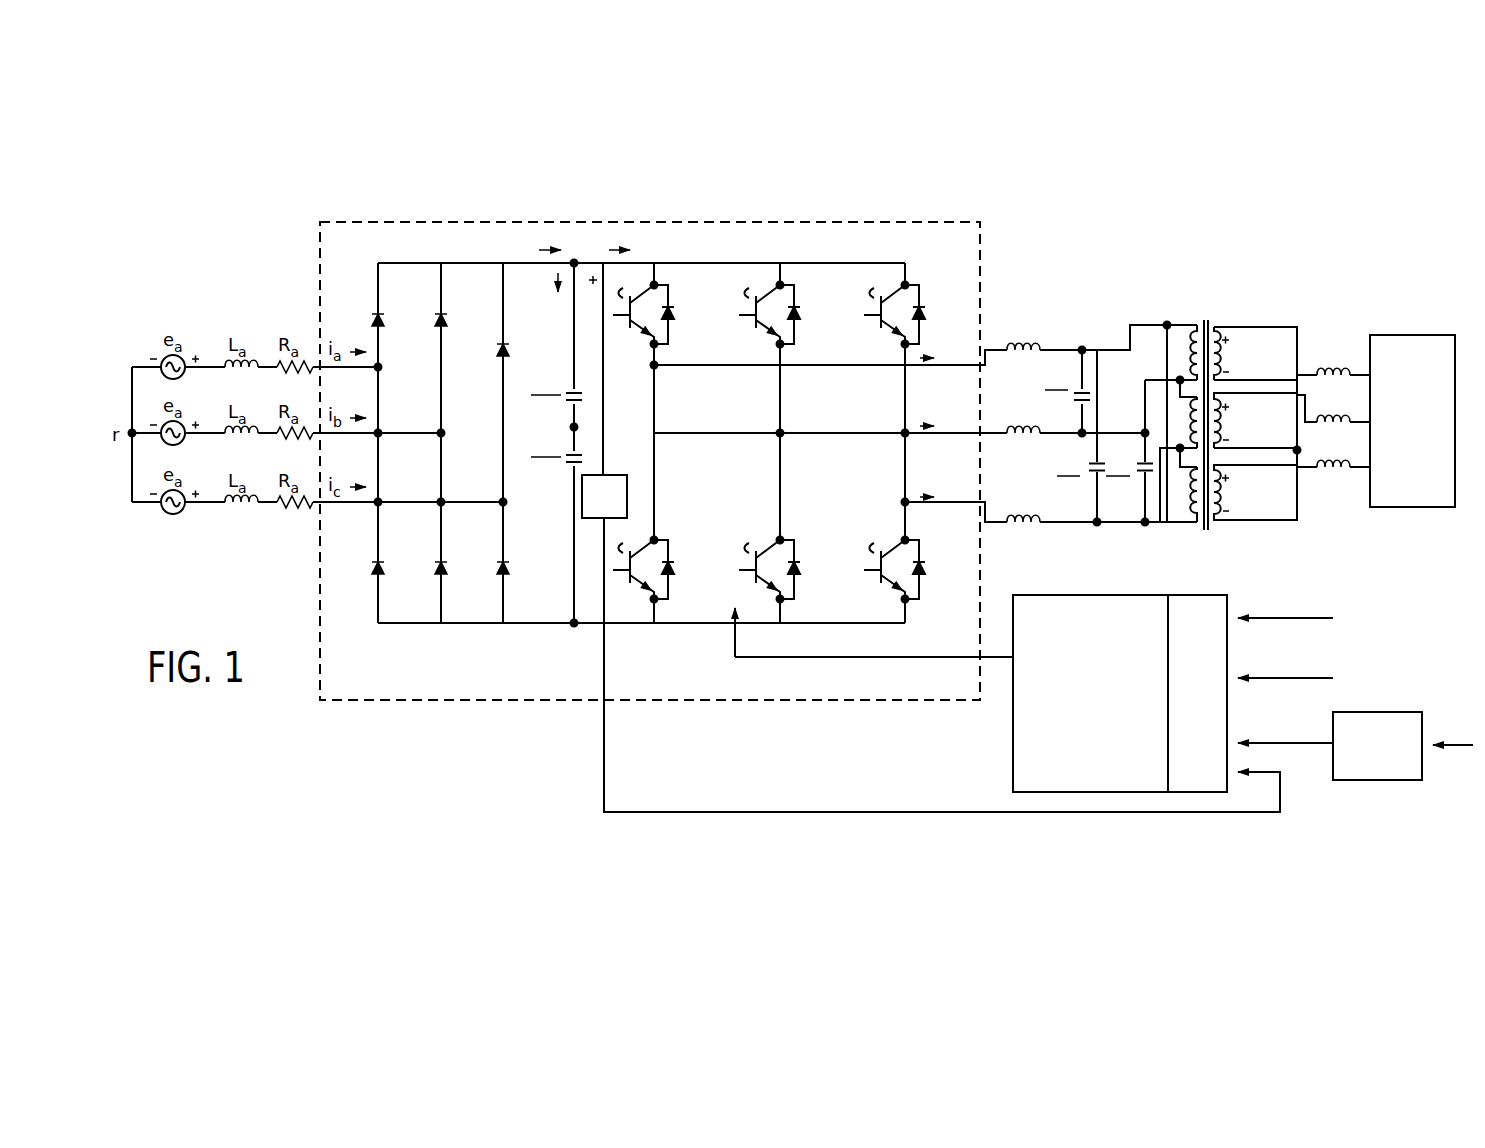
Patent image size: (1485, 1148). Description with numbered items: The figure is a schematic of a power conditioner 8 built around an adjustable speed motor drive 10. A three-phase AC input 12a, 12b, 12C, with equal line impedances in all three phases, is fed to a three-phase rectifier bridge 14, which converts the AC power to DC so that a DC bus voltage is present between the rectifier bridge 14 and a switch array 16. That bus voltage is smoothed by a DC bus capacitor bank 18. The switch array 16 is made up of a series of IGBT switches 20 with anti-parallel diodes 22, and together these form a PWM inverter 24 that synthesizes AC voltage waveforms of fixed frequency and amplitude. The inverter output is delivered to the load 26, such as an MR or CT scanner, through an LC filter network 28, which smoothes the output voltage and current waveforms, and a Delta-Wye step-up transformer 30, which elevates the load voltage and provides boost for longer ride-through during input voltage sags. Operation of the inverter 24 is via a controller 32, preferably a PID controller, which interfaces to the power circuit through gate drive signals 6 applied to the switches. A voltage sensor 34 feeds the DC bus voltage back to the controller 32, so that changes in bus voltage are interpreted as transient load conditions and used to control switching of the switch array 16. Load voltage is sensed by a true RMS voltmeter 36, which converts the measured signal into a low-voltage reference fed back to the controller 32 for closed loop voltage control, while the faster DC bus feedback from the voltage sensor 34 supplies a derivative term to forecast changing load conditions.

The gate drive signal line 6 is at (874, 632).
The power conditioner 8 is at (1118, 225).
The adjustable speed motor drive 10 is at (980, 257).
The three-phase AC input 12a is at (165, 354).
The three-phase AC input 12b is at (181, 422).
The three-phase AC input 12C is at (176, 515).
The three-phase rectifier bridge 14 is at (395, 642).
The switch array 16 is at (702, 632).
The DC bus capacitor bank 18 is at (587, 463).
The IGBT switch 20 is at (760, 435).
The anti-parallel diode 22 is at (813, 433).
The PWM inverter 24 is at (718, 485).
The load 26 is at (1427, 464).
The LC filter network 28 is at (1057, 333).
The step-up transformer 30 is at (1214, 300).
The controller 32 is at (1013, 766).
The voltage sensor 34 is at (628, 493).
The true RMS voltmeter 36 is at (1378, 783).